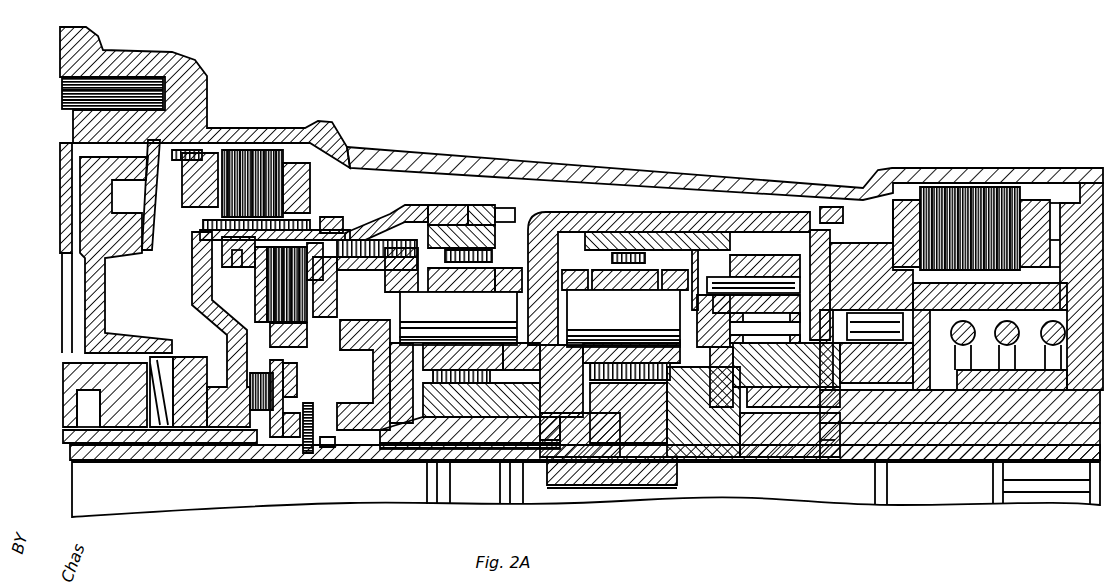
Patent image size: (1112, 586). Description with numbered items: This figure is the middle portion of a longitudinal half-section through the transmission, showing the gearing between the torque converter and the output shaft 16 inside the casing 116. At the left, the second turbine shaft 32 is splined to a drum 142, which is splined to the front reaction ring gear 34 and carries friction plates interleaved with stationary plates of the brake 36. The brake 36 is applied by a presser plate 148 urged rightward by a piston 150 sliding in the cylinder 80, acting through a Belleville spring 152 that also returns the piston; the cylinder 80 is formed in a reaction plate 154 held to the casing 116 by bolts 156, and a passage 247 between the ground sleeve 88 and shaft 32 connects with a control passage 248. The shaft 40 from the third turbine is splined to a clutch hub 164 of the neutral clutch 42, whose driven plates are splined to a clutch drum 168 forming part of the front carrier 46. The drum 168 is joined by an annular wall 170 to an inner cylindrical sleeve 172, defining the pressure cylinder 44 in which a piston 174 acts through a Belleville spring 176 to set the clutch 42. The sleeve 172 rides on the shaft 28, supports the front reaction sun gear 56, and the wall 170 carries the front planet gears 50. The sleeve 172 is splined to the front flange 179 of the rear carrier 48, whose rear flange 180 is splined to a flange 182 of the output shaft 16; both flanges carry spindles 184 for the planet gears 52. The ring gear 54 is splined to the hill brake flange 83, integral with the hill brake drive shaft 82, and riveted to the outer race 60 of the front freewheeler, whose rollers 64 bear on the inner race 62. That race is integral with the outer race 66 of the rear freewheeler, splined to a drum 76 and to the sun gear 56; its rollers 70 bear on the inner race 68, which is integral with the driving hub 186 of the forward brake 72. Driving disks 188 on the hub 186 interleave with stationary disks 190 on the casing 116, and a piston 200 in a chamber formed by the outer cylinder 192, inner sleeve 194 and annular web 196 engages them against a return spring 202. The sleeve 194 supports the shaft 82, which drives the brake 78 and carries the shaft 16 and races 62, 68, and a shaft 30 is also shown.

The output shaft 16 is at (825, 440).
The T1 shaft 28 is at (98, 485).
The intermediate shaft 30 is at (640, 440).
The second turbine shaft 32 is at (75, 442).
The front reaction ring gear 34 is at (500, 215).
The brake 36 is at (288, 190).
The shaft 40 is at (80, 456).
The neutral clutch 42 is at (240, 288).
The pressure cylinder 44 is at (315, 440).
The front carrier 46 is at (510, 266).
The rear carrier 48 is at (582, 270).
The front planet gears 50 is at (458, 318).
The planet gears 52 is at (623, 318).
The ring gear 54 is at (632, 245).
The front reaction sun gear 56 is at (497, 395).
The outer race 60 is at (795, 272).
The inner race 62 is at (765, 328).
The rollers or sprags 64 is at (775, 375).
The outer race 66 is at (873, 268).
The inner race 68 is at (880, 380).
The sprags or rollers 70 is at (856, 263).
The forward brake 72 is at (978, 195).
The drum 76 is at (730, 190).
The brake 78 is at (465, 383).
The cylinder 80 is at (113, 207).
The hill brake drive shaft 82 is at (985, 425).
The hill brake flange 83 is at (740, 385).
The ground sleeve 88 is at (73, 415).
The casing 116 is at (313, 127).
The drum 142 is at (230, 325).
The presser plate 148 is at (205, 215).
The piston 150 is at (113, 270).
The Belleville spring 152 is at (150, 240).
The reaction plate 154 is at (60, 158).
The bolts 156 is at (62, 90).
The clutch hub 164 is at (349, 375).
The clutch drum 168 is at (355, 232).
The annular wall 170 is at (420, 230).
The inner cylindrical sleeve 172 is at (330, 450).
The piston 174 is at (311, 398).
The Belleville spring 176 is at (363, 297).
The front flange 179 is at (569, 265).
The rear flange 180 is at (680, 245).
The flange 182 is at (690, 400).
The spindles 184 is at (657, 325).
The driving hub 186 is at (915, 292).
The driving disks 188 is at (1010, 275).
The stationary disks 190 is at (1025, 190).
The outer cylinder 192 is at (1090, 182).
The inner sleeve 194 is at (1070, 385).
The connecting annular web 196 is at (1012, 330).
The piston 200 is at (1032, 225).
The return spring 202 is at (1012, 380).
The passage 247 is at (68, 436).
The control passage 248 is at (75, 398).